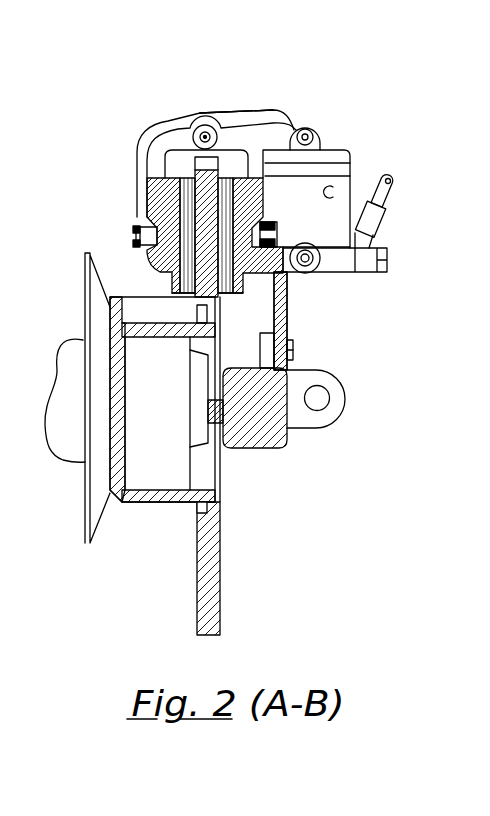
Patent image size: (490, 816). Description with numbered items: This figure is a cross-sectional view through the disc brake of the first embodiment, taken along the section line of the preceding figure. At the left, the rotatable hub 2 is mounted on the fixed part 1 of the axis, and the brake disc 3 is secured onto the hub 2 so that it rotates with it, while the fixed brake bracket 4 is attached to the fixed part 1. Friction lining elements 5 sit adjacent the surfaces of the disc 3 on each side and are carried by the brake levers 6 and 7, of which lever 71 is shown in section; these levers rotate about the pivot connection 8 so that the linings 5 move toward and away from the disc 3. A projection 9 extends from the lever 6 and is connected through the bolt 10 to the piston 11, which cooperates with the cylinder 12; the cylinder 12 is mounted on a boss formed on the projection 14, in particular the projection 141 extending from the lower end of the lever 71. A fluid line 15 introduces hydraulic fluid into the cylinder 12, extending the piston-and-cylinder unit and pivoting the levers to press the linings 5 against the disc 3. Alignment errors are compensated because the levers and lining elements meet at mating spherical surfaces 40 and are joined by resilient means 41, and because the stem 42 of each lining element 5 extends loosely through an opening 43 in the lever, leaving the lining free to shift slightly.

The fixed part of the axis 1 is at (252, 428).
The rotatable hub 2 is at (165, 428).
The brake disc 3 is at (208, 228).
The fixed brake bracket 4 is at (287, 328).
The friction lining elements 5 is at (190, 193).
The brake lever 6 is at (167, 145).
The brake lever 7 is at (242, 140).
The brake lever 71 is at (242, 140).
The pivot connection 8 is at (203, 129).
The projection 9 is at (270, 137).
The bolt 10 is at (309, 130).
The piston 11 is at (317, 147).
The cylinder 12 is at (333, 197).
The projection 14 is at (287, 293).
The projection 141 is at (287, 293).
The fluid line 15 is at (383, 201).
The mating spherical surfaces 40 is at (155, 256).
The resilient means 41 is at (137, 232).
The stem 42 is at (137, 240).
The openings 43 is at (177, 266).